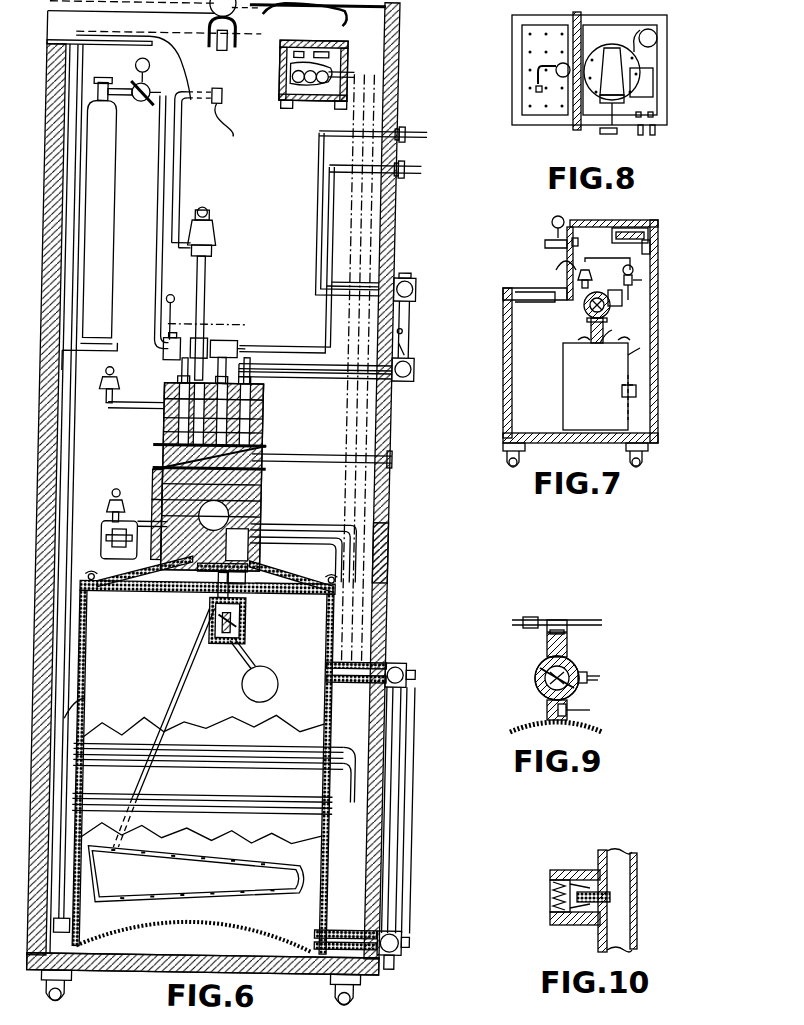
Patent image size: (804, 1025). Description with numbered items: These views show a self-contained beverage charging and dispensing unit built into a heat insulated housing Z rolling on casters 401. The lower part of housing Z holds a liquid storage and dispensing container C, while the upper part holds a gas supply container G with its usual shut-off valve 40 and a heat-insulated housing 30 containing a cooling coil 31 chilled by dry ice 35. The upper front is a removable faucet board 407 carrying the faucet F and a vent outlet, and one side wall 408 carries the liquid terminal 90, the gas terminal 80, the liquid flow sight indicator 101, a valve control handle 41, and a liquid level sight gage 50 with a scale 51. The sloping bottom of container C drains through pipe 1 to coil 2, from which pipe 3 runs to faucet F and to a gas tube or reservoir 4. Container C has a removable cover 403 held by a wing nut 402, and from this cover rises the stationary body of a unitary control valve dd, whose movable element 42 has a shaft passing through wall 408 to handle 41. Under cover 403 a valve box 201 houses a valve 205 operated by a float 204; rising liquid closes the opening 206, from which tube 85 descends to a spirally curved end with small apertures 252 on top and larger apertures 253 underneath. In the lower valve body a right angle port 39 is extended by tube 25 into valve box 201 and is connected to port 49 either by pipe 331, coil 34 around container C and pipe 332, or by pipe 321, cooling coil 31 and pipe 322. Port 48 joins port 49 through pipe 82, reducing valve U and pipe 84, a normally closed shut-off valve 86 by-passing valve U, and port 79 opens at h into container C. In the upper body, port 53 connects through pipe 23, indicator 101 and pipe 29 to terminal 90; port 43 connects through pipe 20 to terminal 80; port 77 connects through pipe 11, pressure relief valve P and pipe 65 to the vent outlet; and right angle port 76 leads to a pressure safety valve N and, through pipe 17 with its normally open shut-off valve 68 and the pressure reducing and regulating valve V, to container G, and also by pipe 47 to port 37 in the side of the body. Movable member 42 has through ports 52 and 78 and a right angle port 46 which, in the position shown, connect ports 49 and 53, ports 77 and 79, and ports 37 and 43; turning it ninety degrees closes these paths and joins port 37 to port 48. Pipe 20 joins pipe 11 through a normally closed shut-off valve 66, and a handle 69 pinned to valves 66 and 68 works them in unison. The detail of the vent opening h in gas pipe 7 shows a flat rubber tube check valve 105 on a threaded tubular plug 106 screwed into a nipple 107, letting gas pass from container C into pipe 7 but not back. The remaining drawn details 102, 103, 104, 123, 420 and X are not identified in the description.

In FIG. 6, the pipe 1 is at (86, 875).
In FIG. 6, the coil 2 is at (130, 804).
In FIG. 6, the pipe 3 is at (100, 706).
In FIG. 6, the gas tube or reservoir 4 is at (372, 25).
In FIG. 10, the gas pipe 7 is at (606, 858).
In FIG. 6, the pipe 11 is at (212, 278).
In FIG. 6, the pipe 17 is at (158, 176).
In FIG. 7, the pipe 17 is at (618, 239).
In FIG. 6, the pipe 20 is at (325, 306).
In FIG. 9, the pipe 20 is at (594, 628).
In FIG. 6, the pipe 23 is at (324, 376).
In FIG. 6, the tube 25 is at (272, 564).
In FIG. 6, the pipe 29 is at (318, 272).
In FIG. 6, the heat-insulated housing 30 is at (296, 100).
In FIG. 8, the heat-insulated housing 30 is at (648, 98).
In FIG. 6, the cooling coil 31 is at (310, 100).
In FIG. 6, the coil 34 is at (134, 728).
In FIG. 6, the dry ice 35 is at (350, 46).
In FIG. 7, the port 37 is at (612, 348).
In FIG. 9, the port 37 is at (590, 684).
In FIG. 6, the right angle port 39 is at (304, 574).
In FIG. 6, the shut-off valve 40 is at (118, 72).
In FIG. 6, the valve control handle 41 is at (406, 454).
In FIG. 8, the valve control handle 41 is at (606, 138).
In FIG. 6, the movable valve member 42 is at (272, 450).
In FIG. 9, the movable valve member 42 is at (538, 680).
In FIG. 6, the port 43 is at (272, 394).
In FIG. 9, the port 43 is at (546, 646).
In FIG. 6, the right angle port 46 is at (272, 488).
In FIG. 9, the right angle port 46 is at (538, 686).
In FIG. 6, the pipe 47 is at (272, 408).
In FIG. 7, the pipe 47 is at (614, 366).
In FIG. 9, the pipe 47 is at (604, 676).
In FIG. 6, the port 48 is at (272, 502).
In FIG. 9, the port 48 is at (546, 712).
In FIG. 6, the port 49 is at (272, 518).
In FIG. 6, the liquid level sight gage 50 is at (426, 806).
In FIG. 6, the scale 51 is at (430, 834).
In FIG. 6, the through port 52 is at (272, 432).
In FIG. 6, the port 53 is at (272, 420).
In FIG. 6, the pipe 65 is at (196, 183).
In FIG. 6, the shut-off valve 66 is at (250, 330).
In FIG. 9, the shut-off valve 66 is at (536, 614).
In FIG. 6, the shut-off valve 68 is at (170, 344).
In FIG. 6, the handle 69 is at (172, 306).
In FIG. 6, the right angle port 76 is at (172, 420).
In FIG. 6, the port 77 is at (168, 446).
In FIG. 6, the through port 78 is at (168, 462).
In FIG. 6, the port 79 is at (170, 486).
In FIG. 6, the gas terminal 80 is at (412, 196).
In FIG. 8, the gas terminal 80 is at (640, 136).
In FIG. 6, the pipe 82 is at (168, 498).
In FIG. 9, the pipe 82 is at (580, 708).
In FIG. 6, the pipe 84 is at (186, 592).
In FIG. 6, the tube 85 is at (192, 676).
In FIG. 6, the shut-off valve 86 is at (114, 540).
In FIG. 6, the liquid terminal 90 is at (406, 118).
In FIG. 8, the liquid terminal 90 is at (652, 136).
In FIG. 6, the liquid flow sight indicator 101 is at (422, 284).
In FIG. 6, the screw 102 is at (412, 328).
In FIG. 6, the lever 103 is at (414, 346).
In FIG. 6, the pipe 104 is at (420, 310).
In FIG. 6, the flat rubber tube check valve 105 is at (422, 364).
In FIG. 10, the flat rubber tube check valve 105 is at (584, 870).
In FIG. 10, the threaded tubular plug 106 is at (554, 904).
In FIG. 10, the nipple 107 is at (552, 920).
In FIG. 6, the port 123 is at (424, 120).
In FIG. 6, the valve box 201 is at (250, 660).
In FIG. 6, the float 204 is at (260, 698).
In FIG. 6, the valve 205 is at (258, 638).
In FIG. 6, the opening 206 is at (258, 620).
In FIG. 6, the small apertures 252 is at (246, 900).
In FIG. 6, the larger apertures 253 is at (290, 914).
In FIG. 6, the pipe 321 is at (356, 412).
In FIG. 6, the pipe 322 is at (362, 430).
In FIG. 6, the pipe 331 is at (336, 566).
In FIG. 6, the pipe 332 is at (350, 520).
In FIG. 6, the casters 401 is at (410, 976).
In FIG. 6, the wing nut 402 is at (380, 578).
In FIG. 6, the removable cover 403 is at (382, 592).
In FIG. 6, the removable faucet board 407 is at (245, 76).
In FIG. 8, the removable faucet board 407 is at (576, 128).
In FIG. 7, the removable faucet board 407 is at (568, 304).
In FIG. 6, the side wall 408 is at (398, 556).
In FIG. 8, the side wall 408 is at (590, 130).
In FIG. 6, the port 420 is at (406, 176).
In FIG. 6, the liquid storage and dispensing container C is at (112, 666).
In FIG. 7, the liquid storage and dispensing container C is at (572, 402).
In FIG. 6, the faucet F is at (216, 42).
In FIG. 8, the faucet F is at (539, 92).
In FIG. 7, the faucet F is at (546, 244).
In FIG. 6, the gas supply container G is at (104, 246).
In FIG. 8, the gas supply container G is at (645, 39).
In FIG. 7, the gas supply container G is at (625, 404).
In FIG. 6, the pressure safety valve N is at (112, 398).
In FIG. 7, the pressure safety valve N is at (604, 268).
In FIG. 6, the pressure relief valve P is at (222, 228).
In FIG. 7, the pressure relief valve P is at (556, 268).
In FIG. 6, the reducing valve U is at (118, 504).
In FIG. 6, the pressure reducing and regulating valve V is at (142, 105).
In FIG. 7, the pressure reducing and regulating valve V is at (625, 280).
In FIG. 6, the gauge X is at (151, 64).
In FIG. 6, the heat insulated housing Z is at (134, 970).
In FIG. 6, the unitary control valve dd is at (172, 394).
In FIG. 8, the unitary control valve dd is at (620, 75).
In FIG. 7, the unitary control valve dd is at (590, 312).
In FIG. 9, the unitary control valve dd is at (540, 664).
In FIG. 6, the vent opening h is at (196, 590).
In FIG. 10, the vent opening h is at (556, 896).